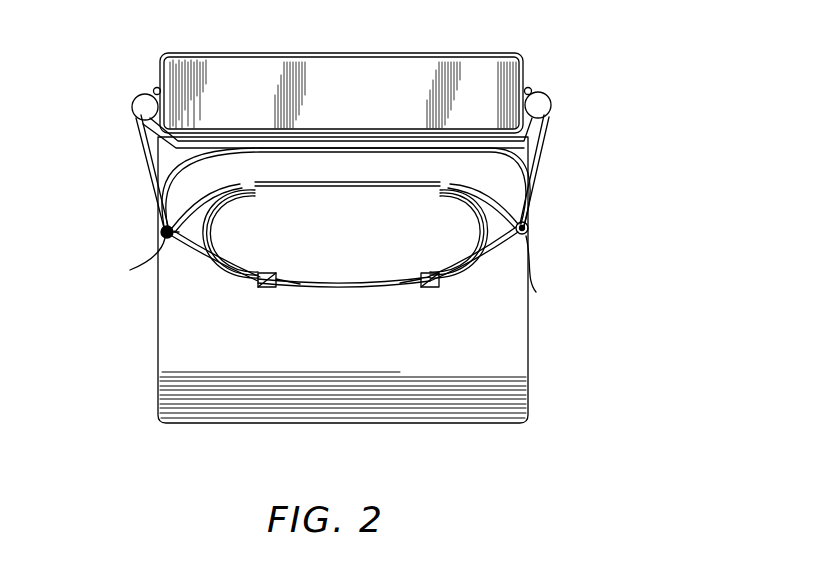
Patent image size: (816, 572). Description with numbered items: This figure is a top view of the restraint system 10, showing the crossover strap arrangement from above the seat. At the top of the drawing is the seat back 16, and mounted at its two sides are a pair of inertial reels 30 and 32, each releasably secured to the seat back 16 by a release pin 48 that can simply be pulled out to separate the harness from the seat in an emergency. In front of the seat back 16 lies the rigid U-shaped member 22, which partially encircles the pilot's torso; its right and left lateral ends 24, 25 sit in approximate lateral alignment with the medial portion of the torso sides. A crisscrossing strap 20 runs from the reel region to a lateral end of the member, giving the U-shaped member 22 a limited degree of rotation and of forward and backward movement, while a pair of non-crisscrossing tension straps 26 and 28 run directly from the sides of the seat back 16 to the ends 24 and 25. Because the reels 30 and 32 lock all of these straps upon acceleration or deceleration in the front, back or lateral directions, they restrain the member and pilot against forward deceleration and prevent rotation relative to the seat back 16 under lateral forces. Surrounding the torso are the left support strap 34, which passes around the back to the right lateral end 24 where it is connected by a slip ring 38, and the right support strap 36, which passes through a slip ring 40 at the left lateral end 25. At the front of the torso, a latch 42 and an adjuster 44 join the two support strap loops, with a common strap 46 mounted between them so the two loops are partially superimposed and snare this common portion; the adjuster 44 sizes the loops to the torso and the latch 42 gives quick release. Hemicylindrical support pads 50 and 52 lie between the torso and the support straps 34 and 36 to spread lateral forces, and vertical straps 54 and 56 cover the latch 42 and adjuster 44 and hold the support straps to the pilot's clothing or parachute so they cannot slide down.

The restraint system 10 is at (632, 278).
The seat back 16 is at (328, 76).
The strap 20 is at (498, 143).
The U-shaped member 22 is at (353, 157).
The right lateral end 24 is at (162, 234).
The left lateral end 25 is at (530, 232).
The tension strap 26 is at (536, 190).
The tension strap 28 is at (149, 183).
The inertial reel 30 is at (133, 98).
The inertial reel 32 is at (553, 104).
The left support strap 34 is at (210, 264).
The right support strap 36 is at (492, 262).
The slip ring 38 is at (130, 270).
The slip ring 40 is at (536, 292).
The latch 42 is at (253, 290).
The adjuster 44 is at (435, 288).
The common strap 46 is at (380, 284).
The release pin 48 is at (153, 92).
The hemicylindrical support pad 50 is at (213, 235).
The hemicylindrical support pad 52 is at (490, 237).
The vertical strap 54 is at (280, 290).
The vertical strap 56 is at (435, 288).